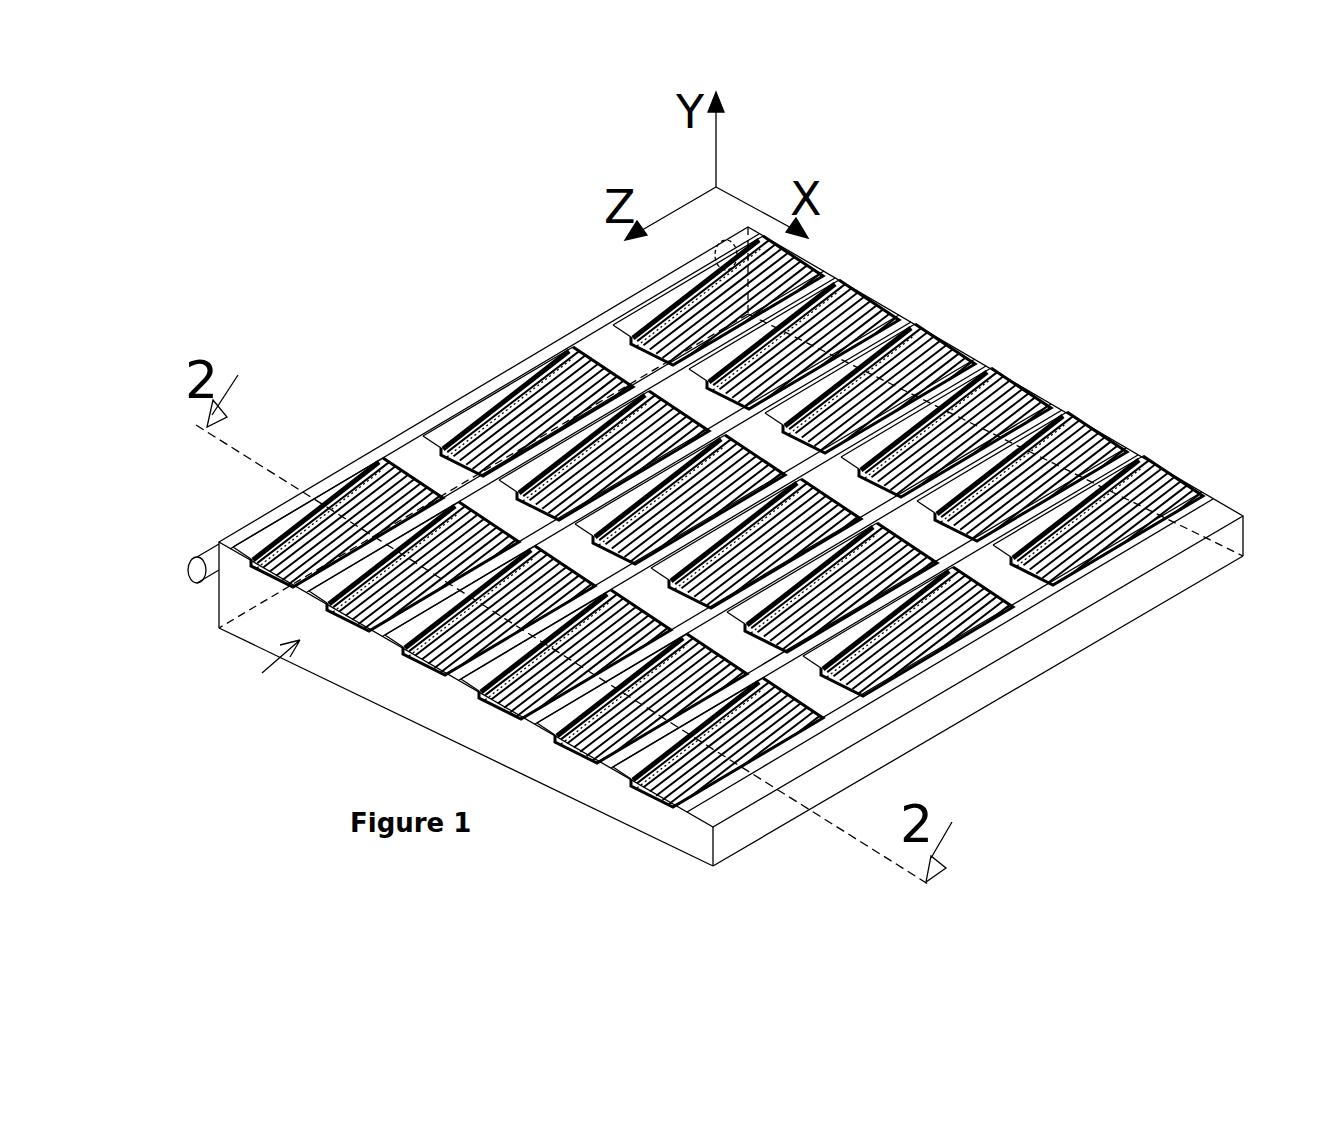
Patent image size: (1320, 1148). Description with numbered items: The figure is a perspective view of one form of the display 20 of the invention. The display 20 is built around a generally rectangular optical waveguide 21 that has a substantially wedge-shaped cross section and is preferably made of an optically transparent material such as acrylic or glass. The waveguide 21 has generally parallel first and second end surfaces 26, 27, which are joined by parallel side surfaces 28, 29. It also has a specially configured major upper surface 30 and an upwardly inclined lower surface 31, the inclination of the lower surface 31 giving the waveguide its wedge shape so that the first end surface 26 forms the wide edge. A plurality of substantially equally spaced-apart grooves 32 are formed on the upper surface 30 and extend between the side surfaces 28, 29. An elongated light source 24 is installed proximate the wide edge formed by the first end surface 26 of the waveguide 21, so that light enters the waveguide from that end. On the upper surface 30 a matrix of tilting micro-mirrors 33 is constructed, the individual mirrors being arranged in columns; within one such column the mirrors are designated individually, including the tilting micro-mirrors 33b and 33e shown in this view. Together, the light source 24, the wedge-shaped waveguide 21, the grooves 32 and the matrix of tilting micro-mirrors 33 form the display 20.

The display 20 is at (398, 360).
The optical waveguide 21 is at (253, 672).
The elongated light source 24 is at (188, 572).
The first end surface 26 is at (219, 592).
The second end surface 27 is at (750, 832).
The side surface 28 is at (661, 830).
The side surface 29 is at (1243, 540).
The major upper surface 30 is at (1212, 518).
The upwardly inclined lower surface 31 is at (616, 824).
The grooves 32 is at (345, 626).
The tilting micro-mirrors 33 is at (862, 310).
The tilting micro-mirror 33b is at (370, 632).
The tilting micro-mirror 33e is at (598, 760).